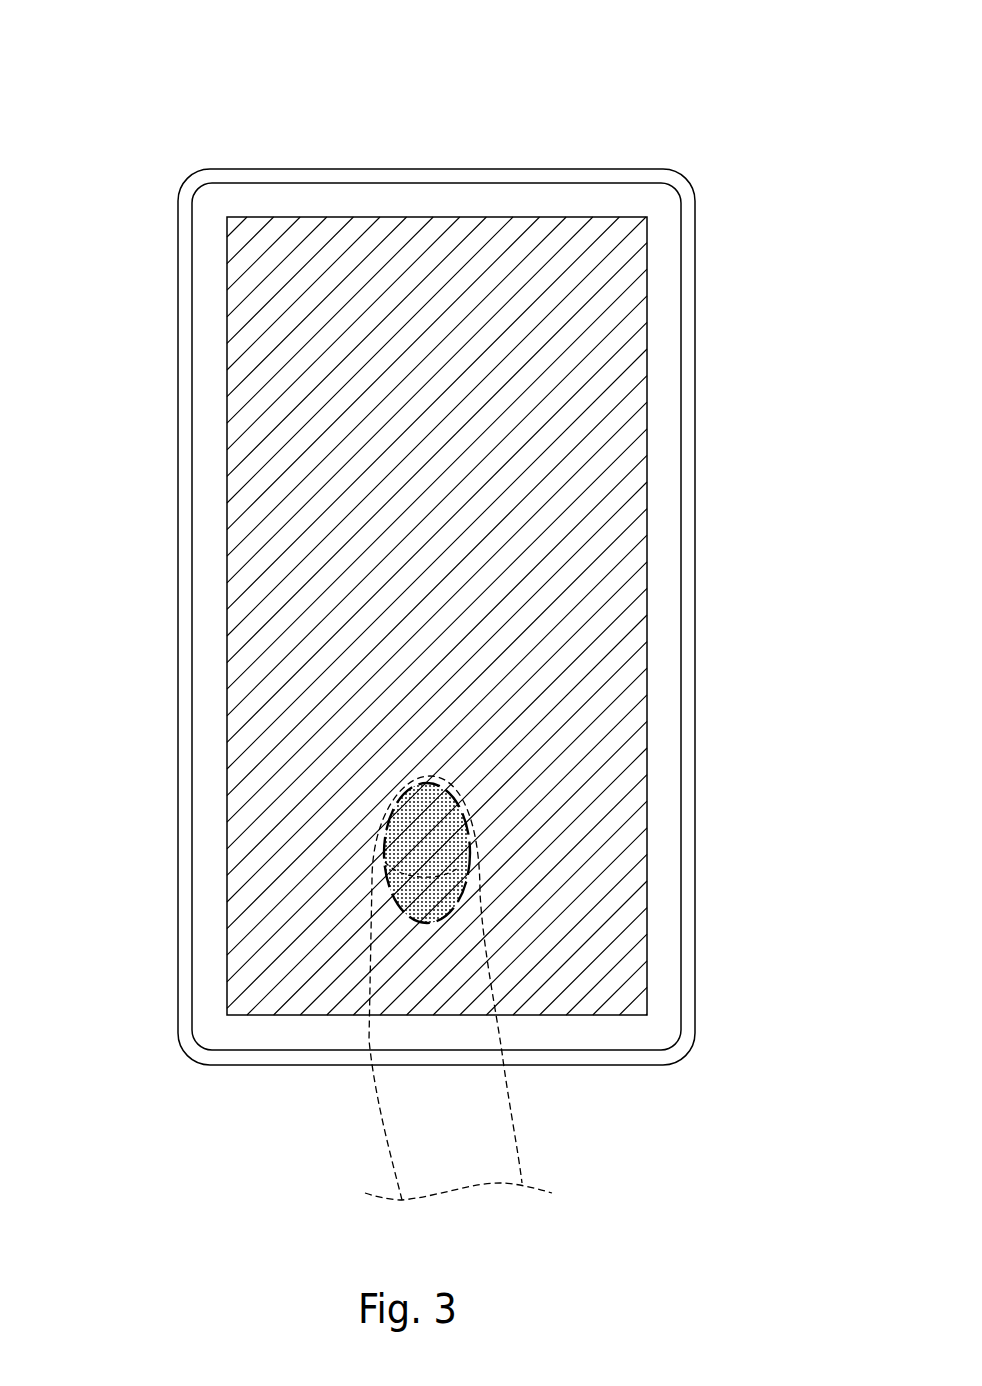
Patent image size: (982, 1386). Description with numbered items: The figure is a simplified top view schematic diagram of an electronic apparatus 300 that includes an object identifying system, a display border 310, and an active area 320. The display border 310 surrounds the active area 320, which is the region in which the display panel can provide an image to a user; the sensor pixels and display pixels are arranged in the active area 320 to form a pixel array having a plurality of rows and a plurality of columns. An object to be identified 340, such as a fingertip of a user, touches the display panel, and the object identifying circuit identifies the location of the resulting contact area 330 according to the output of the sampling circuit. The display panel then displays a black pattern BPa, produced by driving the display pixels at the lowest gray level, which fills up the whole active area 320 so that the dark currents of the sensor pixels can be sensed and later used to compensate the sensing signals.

The electronic apparatus 300 is at (114, 28).
The display border 310 is at (527, 198).
The active area 320 is at (290, 208).
The black pattern BPa is at (612, 583).
The contact area 330 is at (397, 897).
The object to be identified 340 is at (488, 1121).